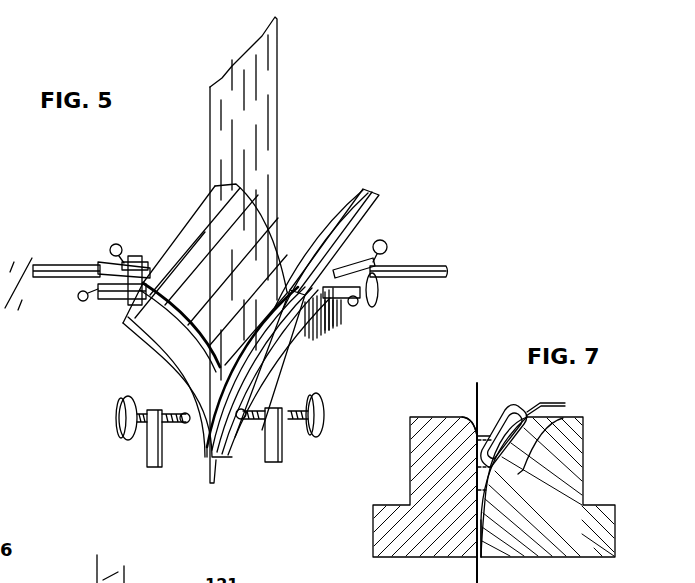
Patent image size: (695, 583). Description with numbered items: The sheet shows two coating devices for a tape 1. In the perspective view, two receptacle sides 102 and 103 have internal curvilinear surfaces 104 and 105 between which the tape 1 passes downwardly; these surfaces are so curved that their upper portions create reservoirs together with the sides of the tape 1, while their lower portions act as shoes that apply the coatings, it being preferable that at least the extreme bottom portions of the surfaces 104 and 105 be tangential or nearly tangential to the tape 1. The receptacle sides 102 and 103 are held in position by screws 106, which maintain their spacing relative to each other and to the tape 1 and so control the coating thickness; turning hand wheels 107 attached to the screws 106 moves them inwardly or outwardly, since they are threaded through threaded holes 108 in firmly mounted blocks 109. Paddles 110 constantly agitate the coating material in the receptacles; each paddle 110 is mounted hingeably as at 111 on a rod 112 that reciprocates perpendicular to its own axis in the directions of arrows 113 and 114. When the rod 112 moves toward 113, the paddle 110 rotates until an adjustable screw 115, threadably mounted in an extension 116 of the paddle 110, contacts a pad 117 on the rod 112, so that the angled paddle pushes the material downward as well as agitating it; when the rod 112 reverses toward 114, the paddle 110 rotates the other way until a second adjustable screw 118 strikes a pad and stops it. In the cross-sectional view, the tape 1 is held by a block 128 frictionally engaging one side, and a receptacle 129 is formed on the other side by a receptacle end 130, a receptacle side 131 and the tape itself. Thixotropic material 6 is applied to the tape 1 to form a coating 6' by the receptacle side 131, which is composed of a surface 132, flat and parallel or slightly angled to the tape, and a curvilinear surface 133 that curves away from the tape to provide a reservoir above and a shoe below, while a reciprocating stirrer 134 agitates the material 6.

In FIG. 5, the tape 1 is at (270, 130).
In FIG. 7, the tape 1 is at (476, 400).
In FIG. 7, the thixotropic material 6 is at (489, 408).
In FIG. 7, the coating 6' is at (495, 570).
In FIG. 5, the receptacle side 102 is at (163, 368).
In FIG. 5, the receptacle side 103 is at (357, 231).
In FIG. 5, the curvilinear surface 104 is at (220, 227).
In FIG. 5, the curvilinear surface 105 is at (338, 233).
In FIG. 5, the screws 106 is at (187, 426).
In FIG. 5, the hand wheels 107 is at (372, 302).
In FIG. 5, the threaded holes 108 is at (183, 432).
In FIG. 5, the blocks 109 is at (147, 453).
In FIG. 5, the paddles 110 is at (157, 293).
In FIG. 5, the hinge 111 is at (133, 267).
In FIG. 5, the rod 112 is at (60, 278).
In FIG. 5, the arrow 113 is at (16, 272).
In FIG. 5, the arrow 114 is at (16, 314).
In FIG. 5, the adjustable screw 115 is at (83, 302).
In FIG. 5, the extension 116 is at (124, 300).
In FIG. 5, the pad 117 is at (98, 266).
In FIG. 5, the adjustable screw 118 is at (112, 248).
In FIG. 7, the block 128 is at (410, 480).
In FIG. 7, the receptacle 129 is at (514, 415).
In FIG. 7, the receptacle end 130 is at (541, 437).
In FIG. 7, the receptacle side 131 is at (494, 470).
In FIG. 7, the surface 132 is at (482, 525).
In FIG. 7, the surface 133 is at (526, 442).
In FIG. 7, the reciprocating stirrer 134 is at (467, 420).